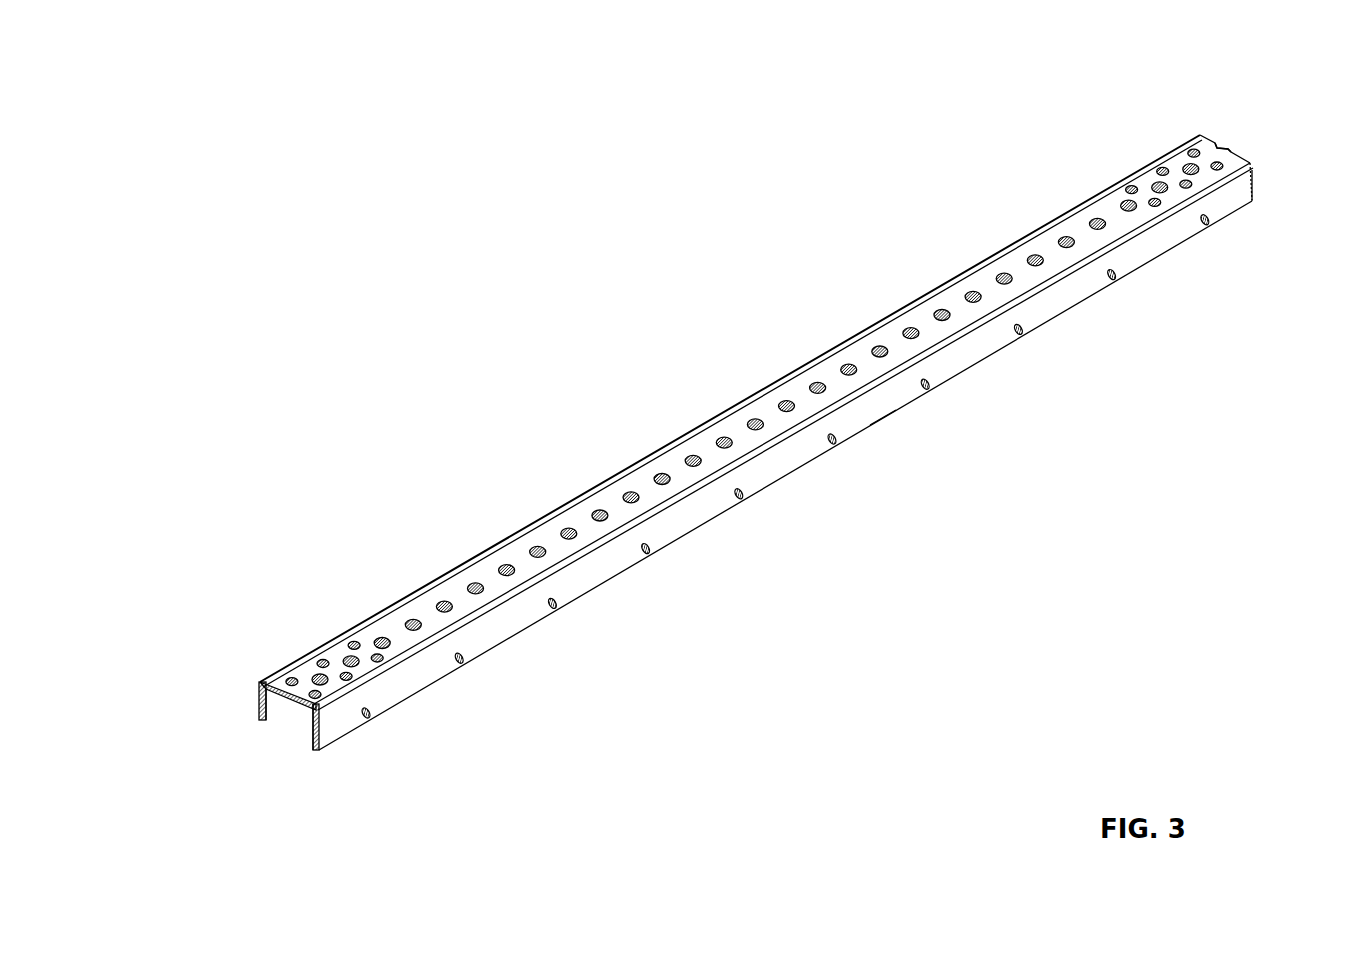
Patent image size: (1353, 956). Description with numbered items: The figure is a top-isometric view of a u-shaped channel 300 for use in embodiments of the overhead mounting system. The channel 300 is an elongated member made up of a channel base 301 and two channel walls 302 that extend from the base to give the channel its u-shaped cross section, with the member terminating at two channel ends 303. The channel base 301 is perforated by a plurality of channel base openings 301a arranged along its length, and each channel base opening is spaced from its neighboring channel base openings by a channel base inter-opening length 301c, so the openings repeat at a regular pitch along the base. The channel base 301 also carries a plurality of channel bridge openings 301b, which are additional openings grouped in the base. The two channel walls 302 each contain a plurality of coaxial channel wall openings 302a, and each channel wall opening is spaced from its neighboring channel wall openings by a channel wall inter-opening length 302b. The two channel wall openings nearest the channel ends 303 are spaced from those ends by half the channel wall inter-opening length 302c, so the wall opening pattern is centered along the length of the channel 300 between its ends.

The channel 300 is at (290, 92).
The channel base 301 is at (478, 556).
The channel base openings 301a is at (972, 289).
The channel bridge openings 301b is at (356, 641).
The channel base inter-opening length 301c is at (831, 366).
The channel walls 302 is at (510, 642).
The coaxial channel wall openings 302a is at (640, 551).
The channel wall inter-opening length 302b is at (884, 422).
The half the channel wall inter-opening length 302c is at (1238, 213).
The channel ends 303 is at (1234, 152).